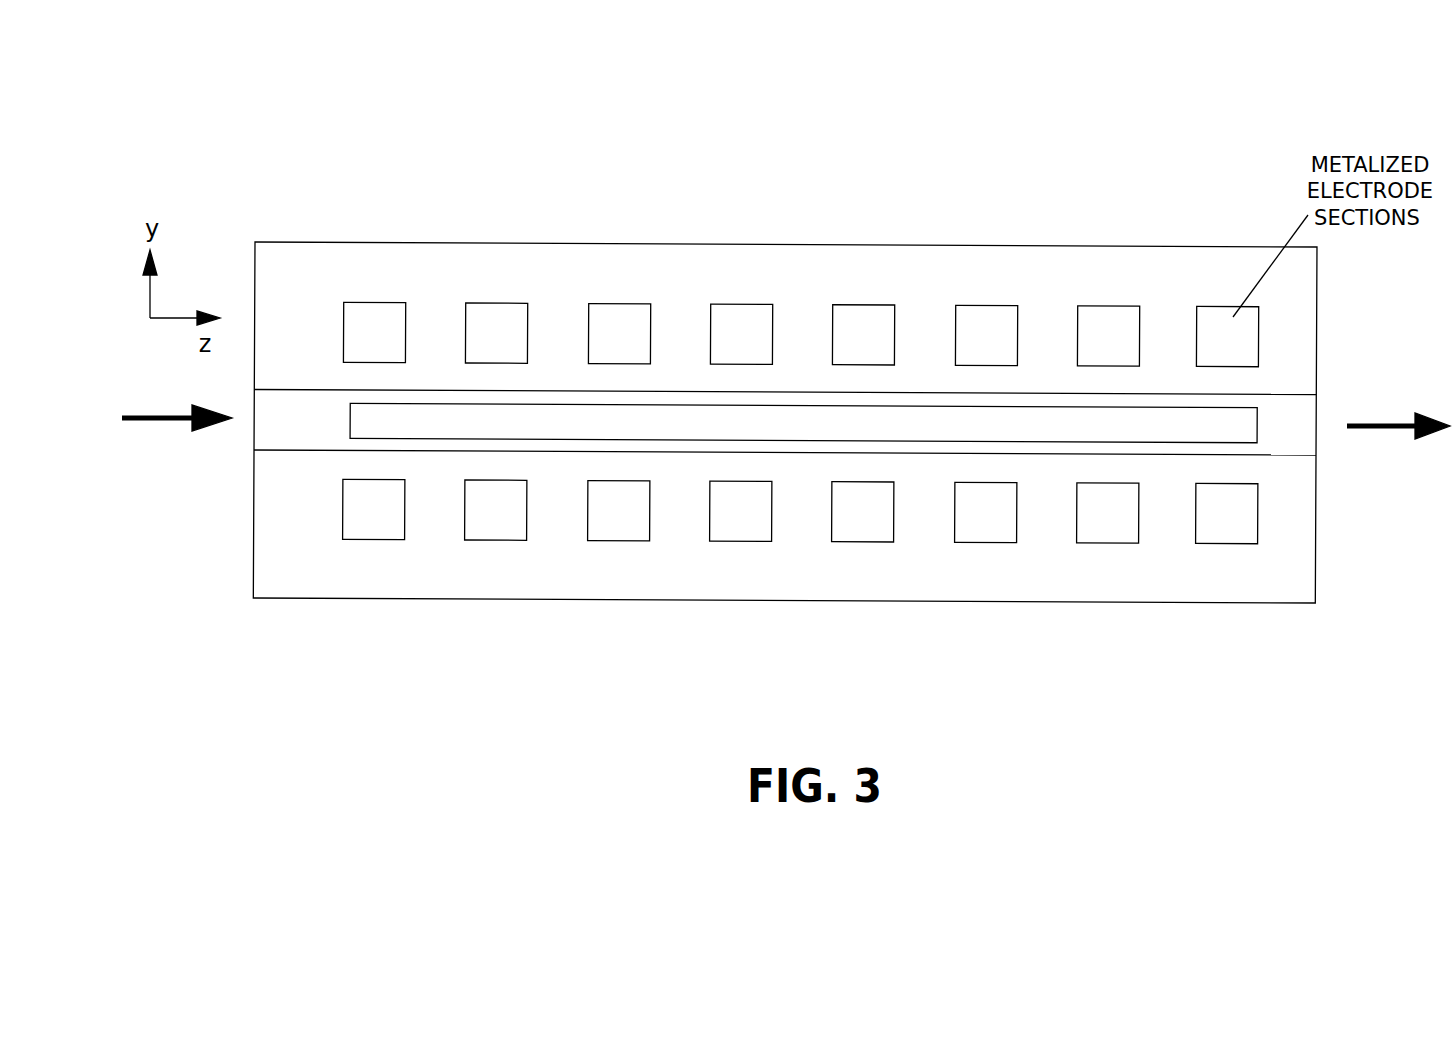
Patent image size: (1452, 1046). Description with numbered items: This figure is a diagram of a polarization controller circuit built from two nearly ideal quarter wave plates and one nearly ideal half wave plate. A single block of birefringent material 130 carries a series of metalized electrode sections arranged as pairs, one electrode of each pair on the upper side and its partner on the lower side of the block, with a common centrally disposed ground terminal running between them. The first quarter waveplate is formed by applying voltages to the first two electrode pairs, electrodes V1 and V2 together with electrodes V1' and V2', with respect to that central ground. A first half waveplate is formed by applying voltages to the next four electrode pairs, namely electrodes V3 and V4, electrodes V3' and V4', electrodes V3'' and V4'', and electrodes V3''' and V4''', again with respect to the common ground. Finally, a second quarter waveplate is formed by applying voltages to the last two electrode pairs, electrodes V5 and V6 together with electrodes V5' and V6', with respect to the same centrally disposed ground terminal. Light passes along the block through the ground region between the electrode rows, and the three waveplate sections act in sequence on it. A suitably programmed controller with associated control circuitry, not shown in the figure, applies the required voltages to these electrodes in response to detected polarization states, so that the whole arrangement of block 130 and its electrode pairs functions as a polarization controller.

The block of birefringent material 130 is at (831, 426).
The electrode V1 is at (374, 264).
The electrode V1' is at (496, 265).
The electrode V3 is at (619, 266).
The electrode V3' is at (741, 266).
The electrode V3'' is at (863, 267).
The electrode V3''' is at (986, 267).
The electrode V5 is at (1108, 268).
The electrode V5' is at (1227, 268).
The electrode V2 is at (373, 580).
The electrode V2' is at (495, 581).
The electrode V4 is at (618, 582).
The electrode V4' is at (740, 582).
The electrode V4'' is at (862, 583).
The electrode V4''' is at (985, 583).
The electrode V6 is at (1107, 584).
The electrode V6' is at (1226, 584).